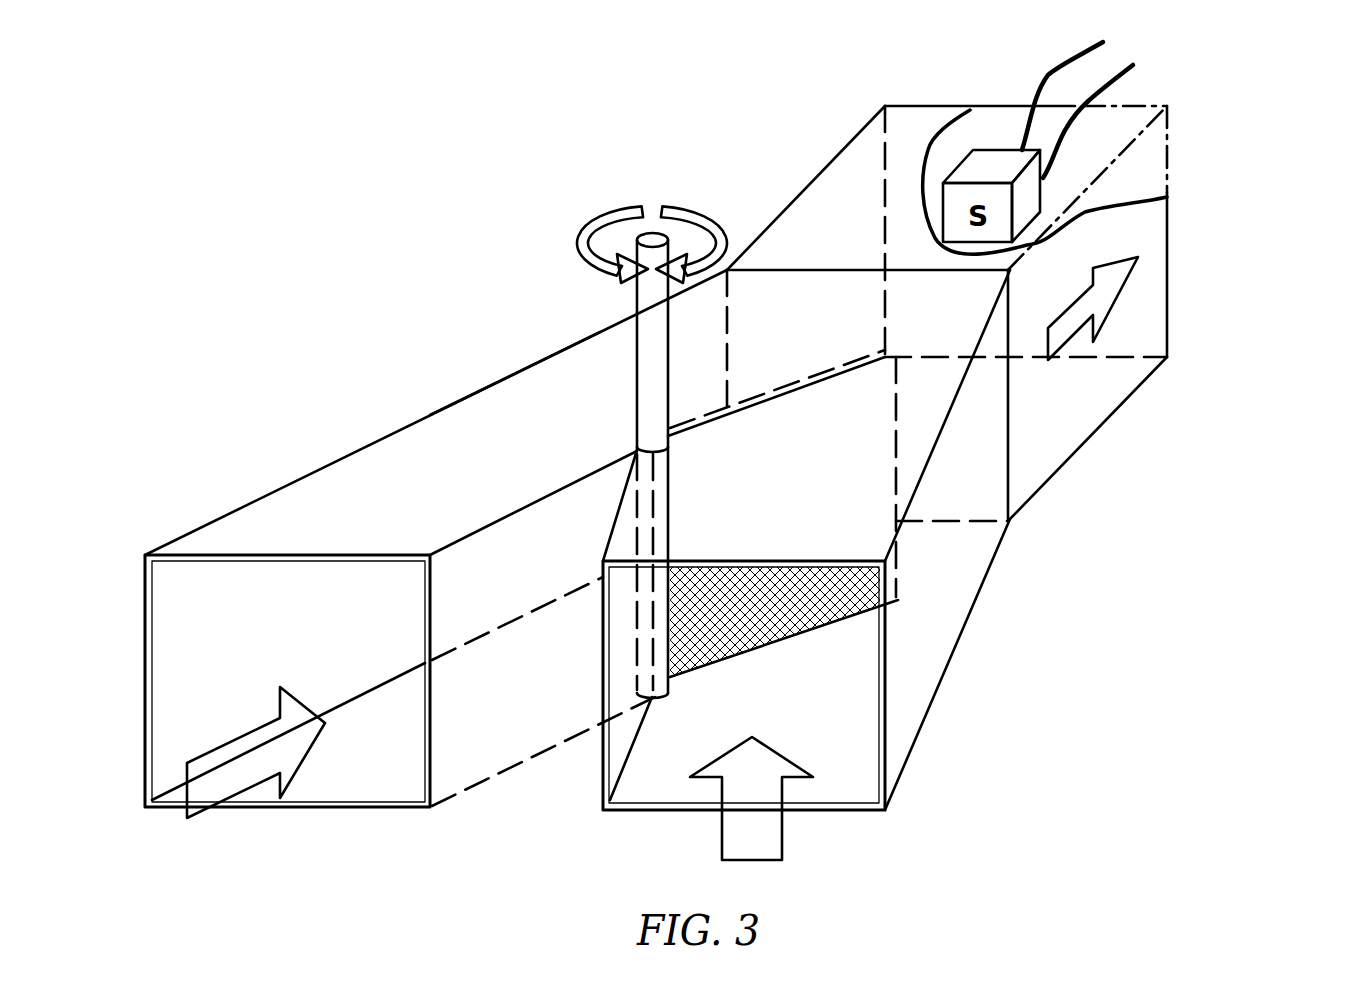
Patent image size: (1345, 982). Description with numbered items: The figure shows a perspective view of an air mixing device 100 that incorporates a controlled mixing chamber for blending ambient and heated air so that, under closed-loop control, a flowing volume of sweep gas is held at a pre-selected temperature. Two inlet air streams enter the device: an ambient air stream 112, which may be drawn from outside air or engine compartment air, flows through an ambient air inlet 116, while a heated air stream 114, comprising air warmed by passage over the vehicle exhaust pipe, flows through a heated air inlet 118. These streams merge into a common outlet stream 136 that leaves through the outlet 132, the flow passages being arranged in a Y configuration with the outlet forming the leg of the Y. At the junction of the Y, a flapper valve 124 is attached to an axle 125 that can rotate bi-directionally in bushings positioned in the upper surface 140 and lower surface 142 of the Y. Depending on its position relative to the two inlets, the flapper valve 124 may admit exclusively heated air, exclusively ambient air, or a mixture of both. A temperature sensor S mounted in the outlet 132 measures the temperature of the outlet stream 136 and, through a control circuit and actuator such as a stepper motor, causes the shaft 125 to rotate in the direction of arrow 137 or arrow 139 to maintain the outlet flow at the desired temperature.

The device 100 is at (1222, 165).
The ambient air stream 112 is at (217, 778).
The heated air stream 114 is at (742, 818).
The ambient air inlet 116 is at (265, 493).
The heated air inlet 118 is at (926, 638).
The flapper valve 124 is at (757, 612).
The axle 125 is at (628, 417).
The outlet 132 is at (1123, 380).
The outlet stream 136 is at (1122, 272).
The arrow 137 is at (603, 218).
The arrow 139 is at (693, 206).
The upper surface 140 is at (513, 408).
The lower surface 142 is at (978, 553).